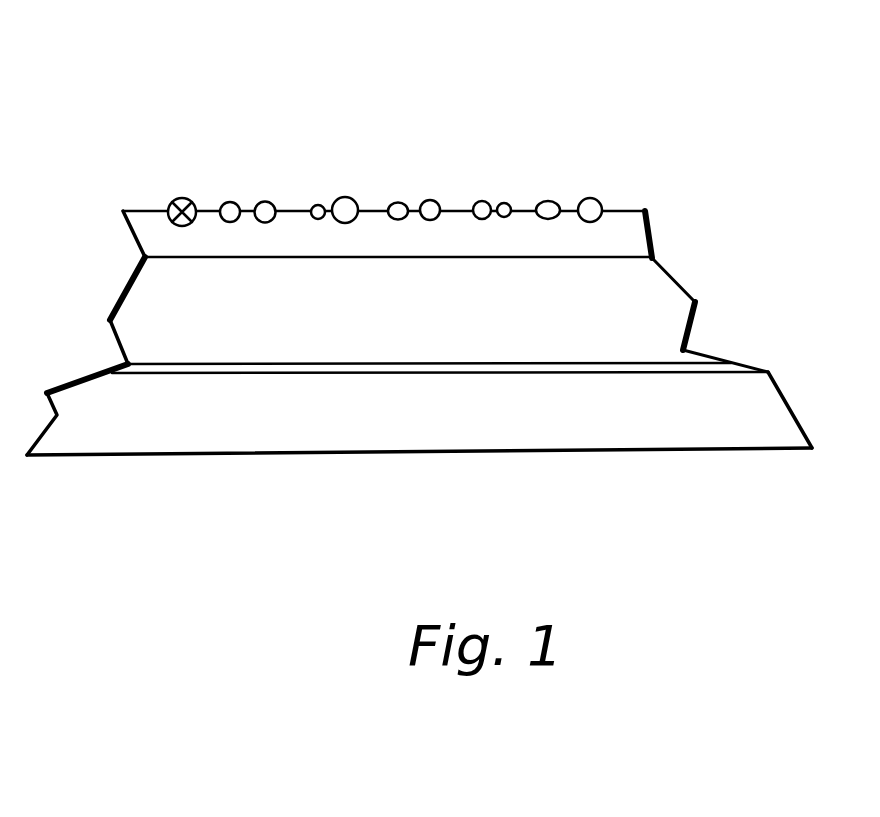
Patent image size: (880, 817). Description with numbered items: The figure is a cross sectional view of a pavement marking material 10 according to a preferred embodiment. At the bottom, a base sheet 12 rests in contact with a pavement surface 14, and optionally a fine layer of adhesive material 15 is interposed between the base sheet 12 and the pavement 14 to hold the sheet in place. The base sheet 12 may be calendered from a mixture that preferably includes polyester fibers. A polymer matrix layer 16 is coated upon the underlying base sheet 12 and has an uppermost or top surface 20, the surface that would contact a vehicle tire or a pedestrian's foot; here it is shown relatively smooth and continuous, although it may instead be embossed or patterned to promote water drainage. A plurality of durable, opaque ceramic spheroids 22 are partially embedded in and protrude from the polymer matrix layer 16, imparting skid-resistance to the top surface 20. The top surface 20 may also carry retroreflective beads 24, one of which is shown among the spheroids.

The pavement marking material 10 is at (446, 85).
The base sheet 12 is at (655, 291).
The pavement surface 14 is at (721, 425).
The adhesive material 15 is at (739, 356).
The polymer matrix layer 16 is at (622, 222).
The top surface 20 is at (620, 210).
The ceramic spheroids 22 is at (250, 198).
The retroreflective beads 24 is at (179, 197).